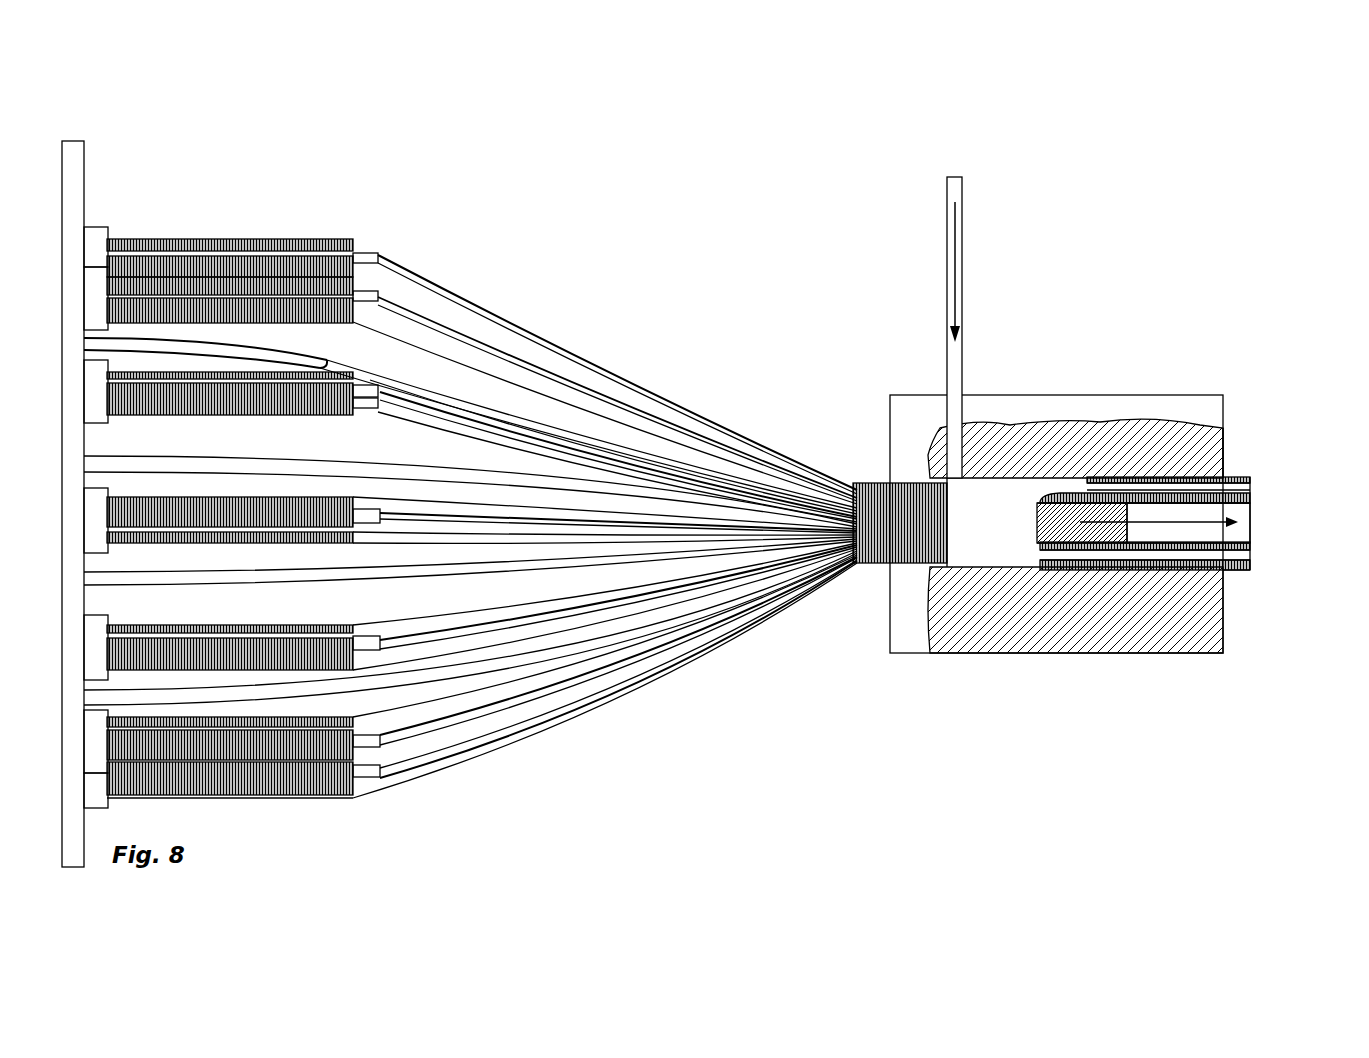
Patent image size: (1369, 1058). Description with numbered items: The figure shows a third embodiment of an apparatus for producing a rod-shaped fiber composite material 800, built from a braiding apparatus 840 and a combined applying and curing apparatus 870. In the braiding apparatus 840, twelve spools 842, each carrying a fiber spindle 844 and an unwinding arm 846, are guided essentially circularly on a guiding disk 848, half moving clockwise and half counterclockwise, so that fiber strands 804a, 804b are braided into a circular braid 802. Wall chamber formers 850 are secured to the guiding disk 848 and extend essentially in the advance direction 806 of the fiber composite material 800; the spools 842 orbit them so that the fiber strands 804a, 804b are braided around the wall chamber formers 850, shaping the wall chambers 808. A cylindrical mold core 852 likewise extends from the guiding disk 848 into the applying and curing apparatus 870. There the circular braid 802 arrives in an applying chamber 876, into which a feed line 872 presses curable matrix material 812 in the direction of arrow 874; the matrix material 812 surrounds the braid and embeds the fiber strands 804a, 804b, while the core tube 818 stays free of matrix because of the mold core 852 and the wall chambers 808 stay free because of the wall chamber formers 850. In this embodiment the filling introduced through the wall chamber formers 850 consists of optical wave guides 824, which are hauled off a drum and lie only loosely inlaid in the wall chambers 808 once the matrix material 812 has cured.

The fiber composite material 800 is at (1240, 584).
The circular braid 802 is at (870, 478).
The fiber strand 804a is at (1240, 478).
The fiber strand 804b is at (1252, 500).
The advance direction arrow 806 is at (1218, 477).
The wall chambers 808 is at (1262, 487).
The matrix material 812 is at (1250, 572).
The core tube 818 is at (1150, 537).
The optical wave guides 824 is at (134, 350).
The braiding apparatus 840 is at (667, 459).
The spools 842 is at (297, 218).
The fiber spindle 844 is at (353, 238).
The unwinding arm 846 is at (333, 240).
The guiding disk 848 is at (72, 183).
The wall chamber formers 850 is at (387, 322).
The mold core 852 is at (485, 510).
The applying and curing apparatus 870 is at (1038, 426).
The feed line 872 is at (1006, 327).
The matrix feed direction arrow 874 is at (957, 300).
The applying chamber 876 is at (985, 470).